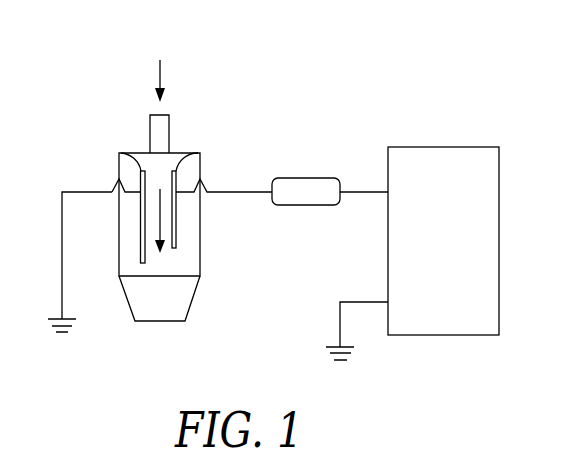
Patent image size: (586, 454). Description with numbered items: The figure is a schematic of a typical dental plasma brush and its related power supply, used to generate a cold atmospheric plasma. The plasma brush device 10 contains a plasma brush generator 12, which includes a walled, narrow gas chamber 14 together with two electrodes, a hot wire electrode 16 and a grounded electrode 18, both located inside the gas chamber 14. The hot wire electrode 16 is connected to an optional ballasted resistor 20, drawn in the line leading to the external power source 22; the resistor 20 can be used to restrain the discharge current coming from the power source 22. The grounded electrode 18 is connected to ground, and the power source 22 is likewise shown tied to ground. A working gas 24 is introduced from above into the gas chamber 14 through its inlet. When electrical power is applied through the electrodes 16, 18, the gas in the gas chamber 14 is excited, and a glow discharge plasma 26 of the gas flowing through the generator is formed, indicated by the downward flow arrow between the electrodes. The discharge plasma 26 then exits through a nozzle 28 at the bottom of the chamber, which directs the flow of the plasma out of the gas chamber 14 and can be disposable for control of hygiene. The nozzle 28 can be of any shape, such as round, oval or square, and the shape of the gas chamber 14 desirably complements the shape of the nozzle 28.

The plasma brush device 10 is at (252, 340).
The plasma brush generator 12 is at (104, 114).
The gas chamber 14 is at (201, 233).
The hot wire electrode 16 is at (190, 154).
The grounded electrode 18 is at (120, 156).
The ballasted resistor 20 is at (304, 178).
The external power source 22 is at (480, 133).
The working gas 24 is at (160, 68).
The glow discharge plasma 26 is at (133, 226).
The nozzle 28 is at (193, 297).